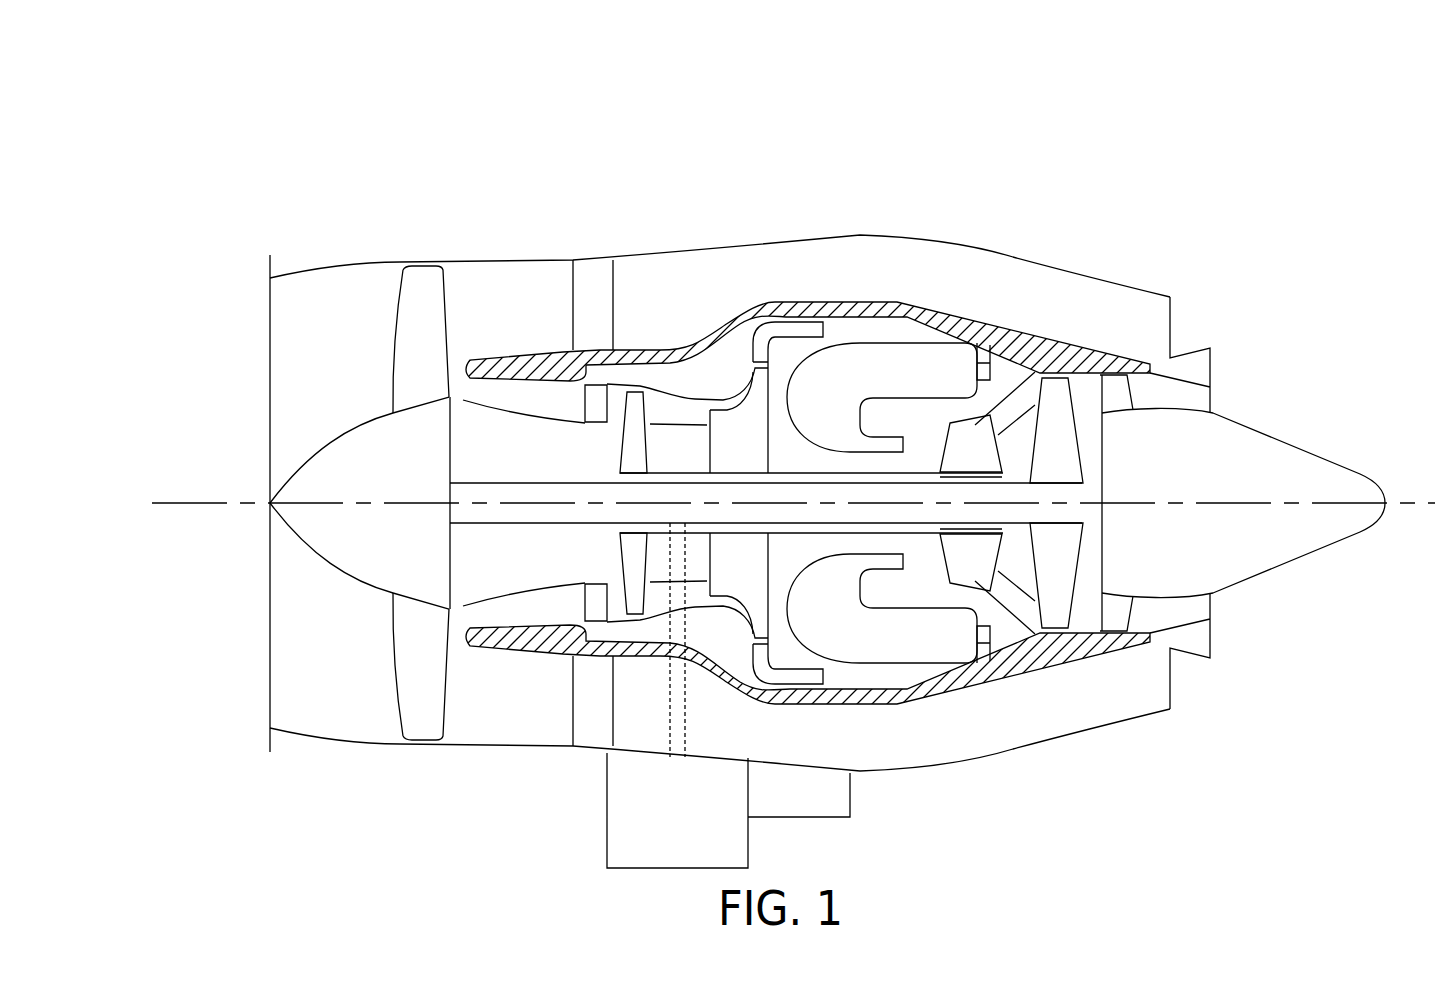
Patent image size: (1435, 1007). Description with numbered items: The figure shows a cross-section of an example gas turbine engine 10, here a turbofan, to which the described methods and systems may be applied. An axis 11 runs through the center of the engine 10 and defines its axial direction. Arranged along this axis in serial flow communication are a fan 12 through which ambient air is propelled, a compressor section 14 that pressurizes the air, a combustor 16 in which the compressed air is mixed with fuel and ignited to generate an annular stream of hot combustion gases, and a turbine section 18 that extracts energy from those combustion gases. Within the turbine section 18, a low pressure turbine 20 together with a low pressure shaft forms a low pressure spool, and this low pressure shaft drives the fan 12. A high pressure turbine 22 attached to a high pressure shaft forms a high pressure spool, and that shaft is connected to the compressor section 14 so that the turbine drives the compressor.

The gas turbine engine 10 is at (1040, 185).
The axis 11 is at (183, 500).
The fan 12 is at (417, 653).
The compressor section 14 is at (667, 403).
The combustor 16 is at (883, 363).
The turbine section 18 is at (1013, 570).
The low pressure turbine 20 is at (1053, 390).
The high pressure turbine 22 is at (968, 430).